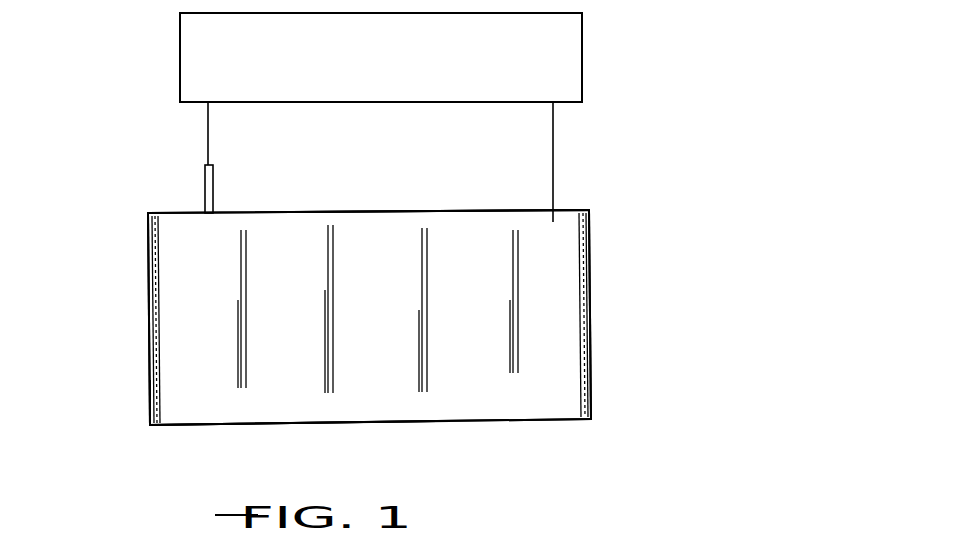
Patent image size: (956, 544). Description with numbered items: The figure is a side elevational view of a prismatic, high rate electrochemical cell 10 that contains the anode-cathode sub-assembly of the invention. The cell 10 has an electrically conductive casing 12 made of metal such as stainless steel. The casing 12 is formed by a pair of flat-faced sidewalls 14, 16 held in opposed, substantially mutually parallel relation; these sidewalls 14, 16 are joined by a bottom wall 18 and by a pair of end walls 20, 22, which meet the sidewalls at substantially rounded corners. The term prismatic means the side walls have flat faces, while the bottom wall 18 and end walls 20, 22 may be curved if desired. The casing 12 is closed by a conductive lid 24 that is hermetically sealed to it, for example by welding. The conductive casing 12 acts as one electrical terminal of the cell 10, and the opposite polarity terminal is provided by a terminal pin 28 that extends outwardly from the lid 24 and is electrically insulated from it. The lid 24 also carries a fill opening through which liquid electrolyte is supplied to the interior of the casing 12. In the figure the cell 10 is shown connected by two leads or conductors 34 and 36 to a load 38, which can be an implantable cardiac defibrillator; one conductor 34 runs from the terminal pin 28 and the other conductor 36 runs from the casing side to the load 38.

The electrochemical cell 10 is at (128, 225).
The casing 12 is at (596, 210).
The sidewall 14 is at (498, 407).
The sidewall 16 is at (190, 388).
The bottom wall 18 is at (376, 425).
The end wall 20 is at (148, 313).
The end wall 22 is at (590, 287).
The lid 24 is at (476, 226).
The terminal pin 28 is at (214, 183).
The conductor 34 is at (206, 136).
The conductor 36 is at (553, 141).
The load 38 is at (582, 58).